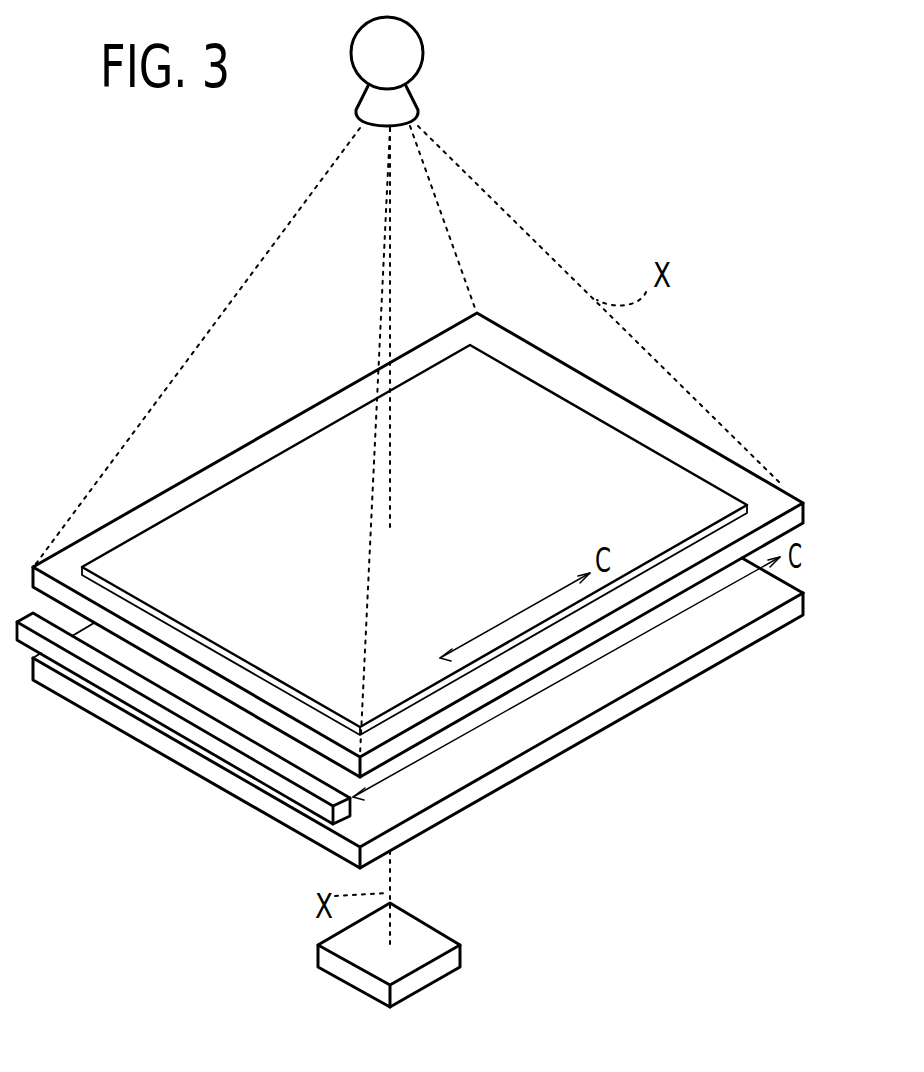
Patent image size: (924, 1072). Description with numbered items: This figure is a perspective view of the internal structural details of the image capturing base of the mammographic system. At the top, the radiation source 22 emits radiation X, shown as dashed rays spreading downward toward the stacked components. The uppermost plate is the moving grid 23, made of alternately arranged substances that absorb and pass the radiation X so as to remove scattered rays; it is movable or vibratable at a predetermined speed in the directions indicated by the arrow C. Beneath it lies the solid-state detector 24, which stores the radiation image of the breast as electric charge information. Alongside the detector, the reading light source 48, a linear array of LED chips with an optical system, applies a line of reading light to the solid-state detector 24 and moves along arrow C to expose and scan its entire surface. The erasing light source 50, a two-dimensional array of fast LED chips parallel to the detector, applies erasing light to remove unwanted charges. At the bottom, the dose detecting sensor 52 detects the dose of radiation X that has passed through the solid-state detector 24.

The radiation source 22 is at (409, 56).
The moving grid 23 is at (190, 517).
The solid-state detector 24 is at (770, 500).
The reading light source 48 is at (107, 683).
The erasing light source 50 is at (705, 633).
The dose detecting sensor 52 is at (412, 930).